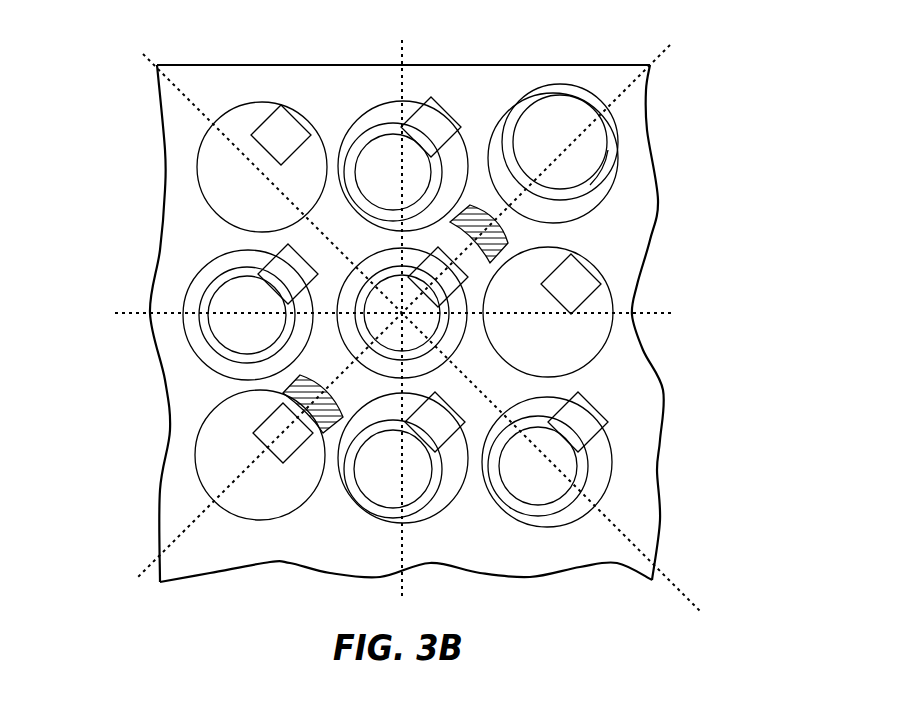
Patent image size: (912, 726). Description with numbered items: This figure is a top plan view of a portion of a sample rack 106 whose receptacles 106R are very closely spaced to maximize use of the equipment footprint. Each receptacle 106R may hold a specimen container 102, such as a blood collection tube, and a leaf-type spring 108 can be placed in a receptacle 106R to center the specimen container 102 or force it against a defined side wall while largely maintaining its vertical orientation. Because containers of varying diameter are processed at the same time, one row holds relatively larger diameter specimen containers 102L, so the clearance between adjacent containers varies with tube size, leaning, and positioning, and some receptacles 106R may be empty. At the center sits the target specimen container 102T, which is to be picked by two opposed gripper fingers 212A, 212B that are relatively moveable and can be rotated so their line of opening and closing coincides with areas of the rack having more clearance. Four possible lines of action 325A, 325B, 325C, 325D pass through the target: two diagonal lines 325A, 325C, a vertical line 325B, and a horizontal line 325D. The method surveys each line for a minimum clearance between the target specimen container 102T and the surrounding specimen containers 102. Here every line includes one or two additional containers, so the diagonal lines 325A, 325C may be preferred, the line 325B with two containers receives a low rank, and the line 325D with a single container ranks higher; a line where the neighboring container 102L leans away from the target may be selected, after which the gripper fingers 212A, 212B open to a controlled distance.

The specimen container 102 is at (367, 125).
The larger diameter specimen container 102L is at (622, 142).
The target specimen container 102T is at (350, 263).
The sample rack 106 is at (597, 65).
The receptacle 106R is at (212, 132).
The spring 108 is at (597, 442).
The gripper finger 212A is at (283, 393).
The gripper finger 212B is at (508, 243).
The line of action 325A is at (157, 562).
The line of action 325B is at (400, 590).
The line of action 325C is at (677, 573).
The line of action 325D is at (648, 316).